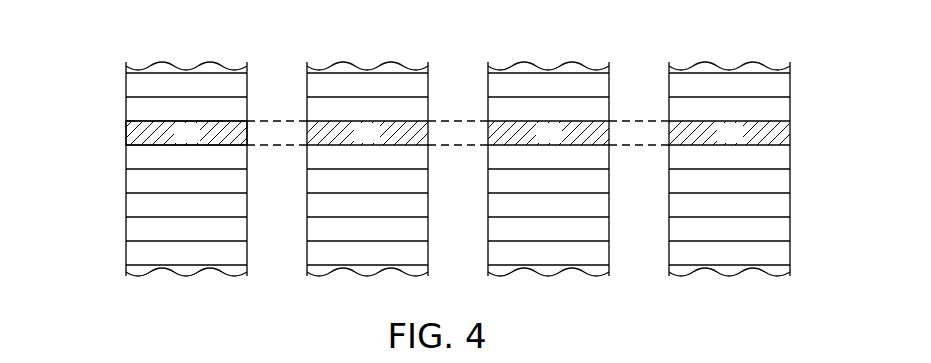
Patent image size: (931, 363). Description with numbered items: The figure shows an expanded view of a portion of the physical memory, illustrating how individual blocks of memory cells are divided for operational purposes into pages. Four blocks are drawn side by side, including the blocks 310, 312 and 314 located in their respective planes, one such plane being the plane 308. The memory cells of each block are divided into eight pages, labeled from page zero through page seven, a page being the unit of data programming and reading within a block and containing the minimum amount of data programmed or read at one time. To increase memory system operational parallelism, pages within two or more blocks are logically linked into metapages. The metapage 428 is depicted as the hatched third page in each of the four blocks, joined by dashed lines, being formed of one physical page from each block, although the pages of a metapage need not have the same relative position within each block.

The plane 308 is at (126, 77).
The block 310 is at (307, 77).
The block 312 is at (488, 77).
The block 314 is at (669, 77).
The metapage 428 is at (126, 130).